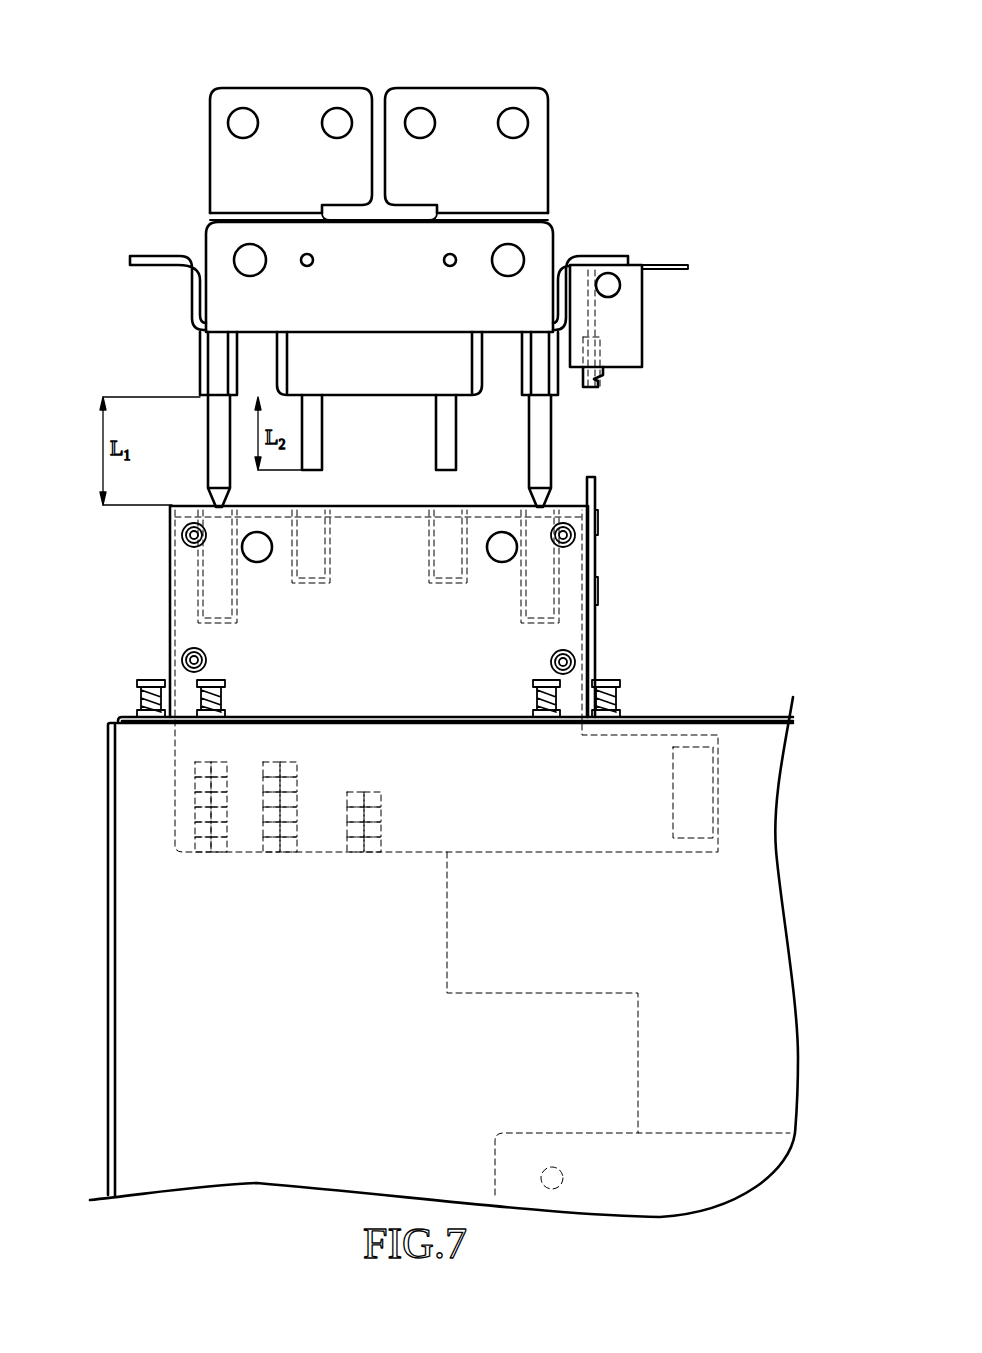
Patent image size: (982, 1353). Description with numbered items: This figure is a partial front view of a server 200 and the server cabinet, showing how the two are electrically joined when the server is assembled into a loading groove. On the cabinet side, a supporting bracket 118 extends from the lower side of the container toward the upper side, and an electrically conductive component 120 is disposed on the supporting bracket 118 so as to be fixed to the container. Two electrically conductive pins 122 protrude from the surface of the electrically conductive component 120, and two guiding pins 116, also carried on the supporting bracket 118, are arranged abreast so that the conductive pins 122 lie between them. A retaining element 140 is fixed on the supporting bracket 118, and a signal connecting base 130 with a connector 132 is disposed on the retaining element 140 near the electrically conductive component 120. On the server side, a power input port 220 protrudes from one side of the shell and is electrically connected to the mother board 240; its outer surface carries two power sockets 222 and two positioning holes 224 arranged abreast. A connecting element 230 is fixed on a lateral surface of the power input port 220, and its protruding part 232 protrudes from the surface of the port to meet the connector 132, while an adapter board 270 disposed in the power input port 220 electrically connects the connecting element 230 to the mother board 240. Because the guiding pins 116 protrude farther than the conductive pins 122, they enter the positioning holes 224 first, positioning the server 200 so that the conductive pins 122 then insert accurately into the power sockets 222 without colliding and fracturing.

The supporting bracket 118 is at (466, 105).
The electrically conductive component 120 is at (275, 360).
The guiding pin 116 is at (210, 457).
The electrically conductive pin 122 is at (322, 442).
The signal connecting base 130 is at (603, 320).
The connector 132 is at (587, 388).
The retaining element 140 is at (650, 315).
The server 200 is at (110, 718).
The power input port 220 is at (167, 595).
The power socket 222 is at (300, 568).
The positioning hole 224 is at (228, 618).
The connecting element 230 is at (598, 562).
The protruding part 232 is at (592, 547).
The mother board 240 is at (740, 1178).
The adapter board 270 is at (180, 745).